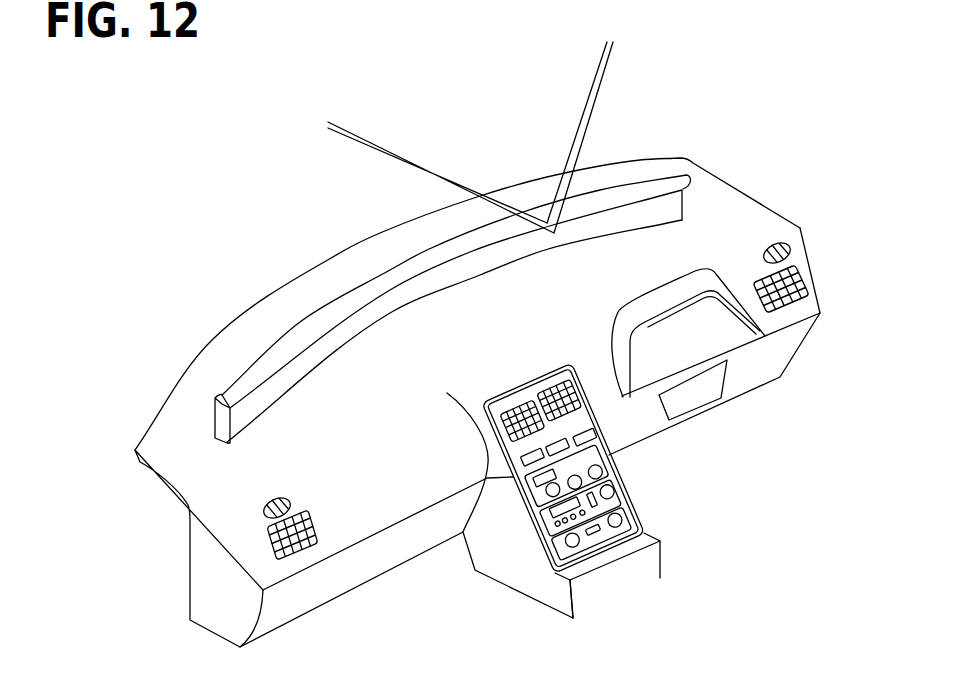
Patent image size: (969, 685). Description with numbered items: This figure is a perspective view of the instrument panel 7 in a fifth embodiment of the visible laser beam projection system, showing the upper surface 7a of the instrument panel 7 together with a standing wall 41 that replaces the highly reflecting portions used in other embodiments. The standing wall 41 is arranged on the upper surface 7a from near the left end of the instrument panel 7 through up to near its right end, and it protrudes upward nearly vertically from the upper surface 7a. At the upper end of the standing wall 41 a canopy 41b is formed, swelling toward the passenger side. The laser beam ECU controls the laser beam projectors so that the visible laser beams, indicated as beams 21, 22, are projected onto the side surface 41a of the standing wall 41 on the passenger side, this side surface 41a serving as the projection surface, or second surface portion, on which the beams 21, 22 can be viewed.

The instrument panel 7 is at (478, 389).
The upper surface of instrument panel 7a is at (373, 263).
The beam 21 is at (388, 148).
The beam 22 is at (593, 97).
The standing wall 41 is at (518, 296).
The side surface of standing wall 41a is at (252, 402).
The canopy 41b is at (268, 363).